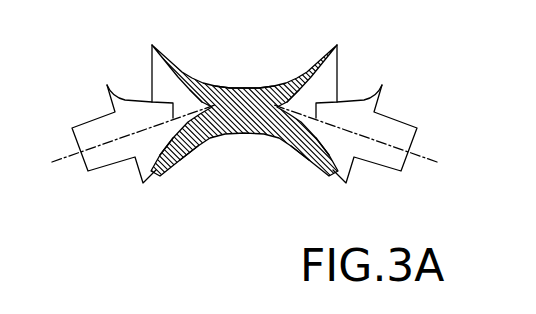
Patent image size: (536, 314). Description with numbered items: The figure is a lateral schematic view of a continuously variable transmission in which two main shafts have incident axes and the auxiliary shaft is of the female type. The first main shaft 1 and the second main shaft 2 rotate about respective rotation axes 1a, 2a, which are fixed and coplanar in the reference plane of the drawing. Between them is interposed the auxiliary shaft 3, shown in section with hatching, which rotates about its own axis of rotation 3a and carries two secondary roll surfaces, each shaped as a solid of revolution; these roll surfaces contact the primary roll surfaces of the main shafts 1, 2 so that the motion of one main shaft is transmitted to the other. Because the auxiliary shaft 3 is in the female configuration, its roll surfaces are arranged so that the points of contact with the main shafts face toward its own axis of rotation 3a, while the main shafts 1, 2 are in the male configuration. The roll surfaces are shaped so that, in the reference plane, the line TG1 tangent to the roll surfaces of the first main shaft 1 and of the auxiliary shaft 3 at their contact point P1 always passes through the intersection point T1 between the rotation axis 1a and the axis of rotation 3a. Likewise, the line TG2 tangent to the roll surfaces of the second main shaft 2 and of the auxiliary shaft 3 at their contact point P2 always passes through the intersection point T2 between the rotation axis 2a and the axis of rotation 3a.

The first main shaft 1 is at (97, 118).
The rotation axis of the first main shaft 1a is at (128, 134).
The second main shaft 2 is at (398, 118).
The rotation axis of the second main shaft 2a is at (382, 144).
The auxiliary shaft 3 is at (243, 82).
The axis of rotation of the auxiliary shaft 3a is at (259, 100).
The intersection point T1 is at (196, 100).
The intersection point T2 is at (292, 102).
The tangent line TG1 is at (187, 150).
The tangent line TG2 is at (297, 135).
The contact point P1 is at (163, 150).
The contact point P2 is at (320, 153).